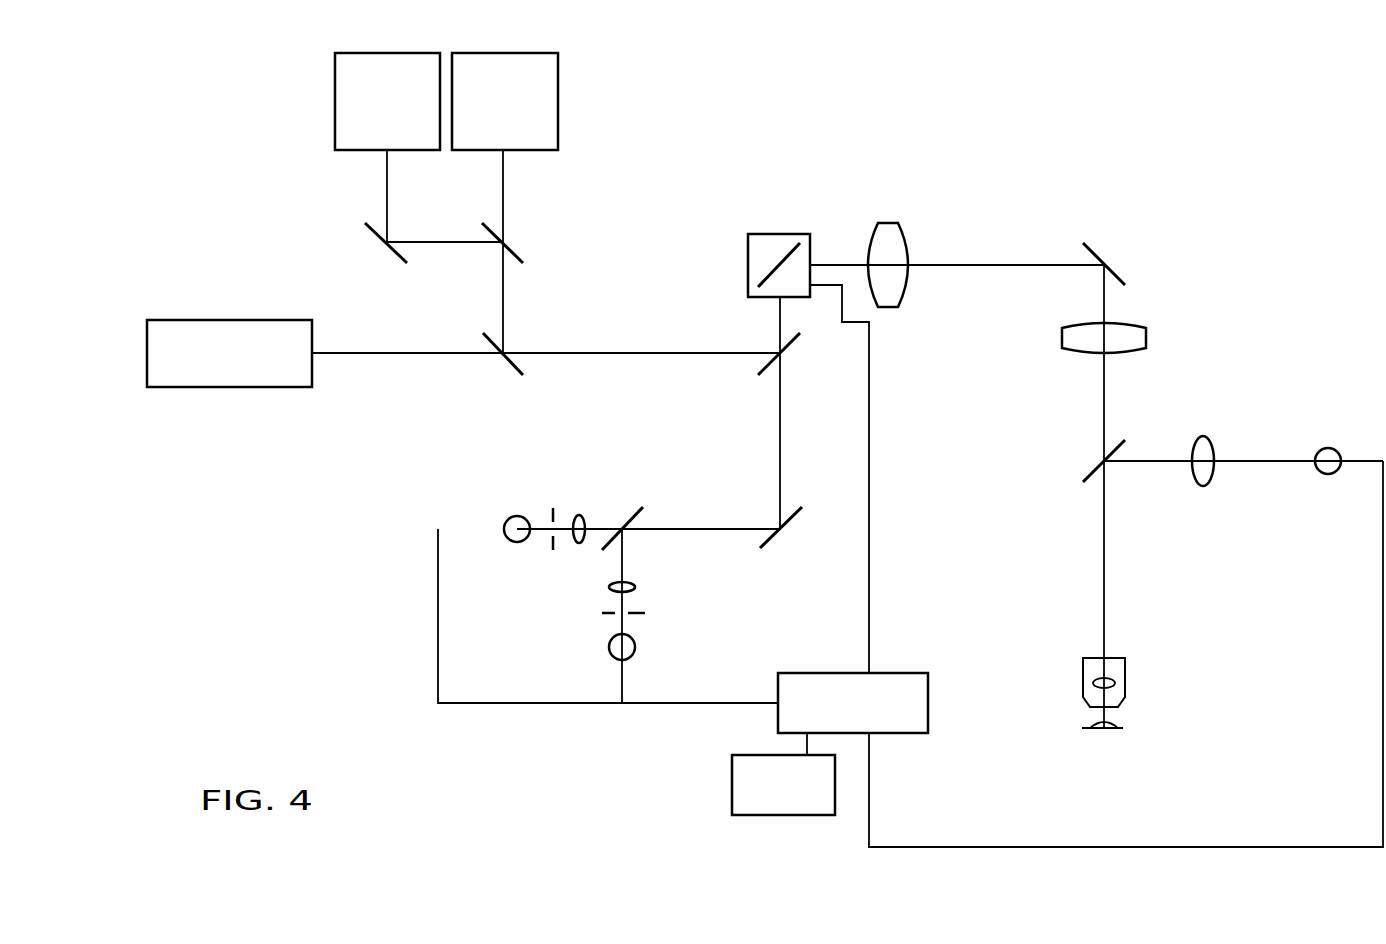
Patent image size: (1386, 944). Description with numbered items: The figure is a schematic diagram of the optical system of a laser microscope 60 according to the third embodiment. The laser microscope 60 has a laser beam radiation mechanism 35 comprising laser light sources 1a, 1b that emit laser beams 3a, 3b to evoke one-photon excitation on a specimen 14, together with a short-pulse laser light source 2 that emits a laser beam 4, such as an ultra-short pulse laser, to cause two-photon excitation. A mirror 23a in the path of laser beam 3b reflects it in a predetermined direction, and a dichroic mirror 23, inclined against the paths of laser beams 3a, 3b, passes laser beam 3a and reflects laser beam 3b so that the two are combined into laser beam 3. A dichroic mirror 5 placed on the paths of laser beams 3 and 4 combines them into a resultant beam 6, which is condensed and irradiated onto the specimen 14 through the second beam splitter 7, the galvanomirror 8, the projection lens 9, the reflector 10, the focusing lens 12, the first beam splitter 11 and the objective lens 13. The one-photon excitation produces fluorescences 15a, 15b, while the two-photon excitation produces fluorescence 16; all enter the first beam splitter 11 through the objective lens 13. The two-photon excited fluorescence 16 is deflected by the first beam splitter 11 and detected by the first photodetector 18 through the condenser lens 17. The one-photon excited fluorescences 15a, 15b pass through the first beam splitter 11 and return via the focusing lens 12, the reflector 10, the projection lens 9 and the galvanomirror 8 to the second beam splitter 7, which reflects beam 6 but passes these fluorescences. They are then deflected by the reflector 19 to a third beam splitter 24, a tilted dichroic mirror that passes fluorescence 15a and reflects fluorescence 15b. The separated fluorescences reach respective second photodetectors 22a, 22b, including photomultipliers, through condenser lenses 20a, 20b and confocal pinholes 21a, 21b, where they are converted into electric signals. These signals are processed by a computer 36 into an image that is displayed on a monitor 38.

The laser light source 1a is at (558, 100).
The laser light source 1b is at (335, 99).
The short-pulse laser light source 2 is at (235, 320).
The laser beam 3 is at (523, 332).
The laser beam 3a is at (523, 218).
The laser beam 3b is at (406, 218).
The laser beam 4 is at (425, 373).
The dichroic mirror 5 is at (513, 365).
The beam 6 is at (660, 332).
The second beam splitter 7 is at (805, 345).
The galvanomirror 8 is at (783, 246).
The projection lens 9 is at (885, 222).
The reflector 10 is at (1097, 249).
The first beam splitter 11 is at (1092, 463).
The focusing lens 12 is at (1062, 335).
The objective lens 13 is at (1083, 672).
The specimen 14 is at (1152, 722).
The 1-photon excited fluorescence 15a is at (760, 468).
The 1-photon excited fluorescence 15b is at (647, 576).
The 2-photon excited fluorescence 16 is at (1183, 438).
The condenser lens 17 is at (1203, 487).
The first photodetector 18 is at (1328, 475).
The reflector 19 is at (765, 552).
The condenser lens 20a is at (578, 545).
The condenser lens 20b is at (633, 587).
The confocal pinhole 21a is at (550, 546).
The confocal pinhole 21b is at (638, 614).
The second photodetector 22a is at (517, 516).
The second photodetector 22b is at (607, 647).
The dichroic mirror 23 is at (523, 255).
The mirror 23a is at (393, 253).
The third beam splitter 24 is at (636, 515).
The laser beam radiation mechanism 35 is at (578, 371).
The computer 36 is at (910, 673).
The monitor 38 is at (732, 785).
The laser microscope 60 is at (1217, 168).